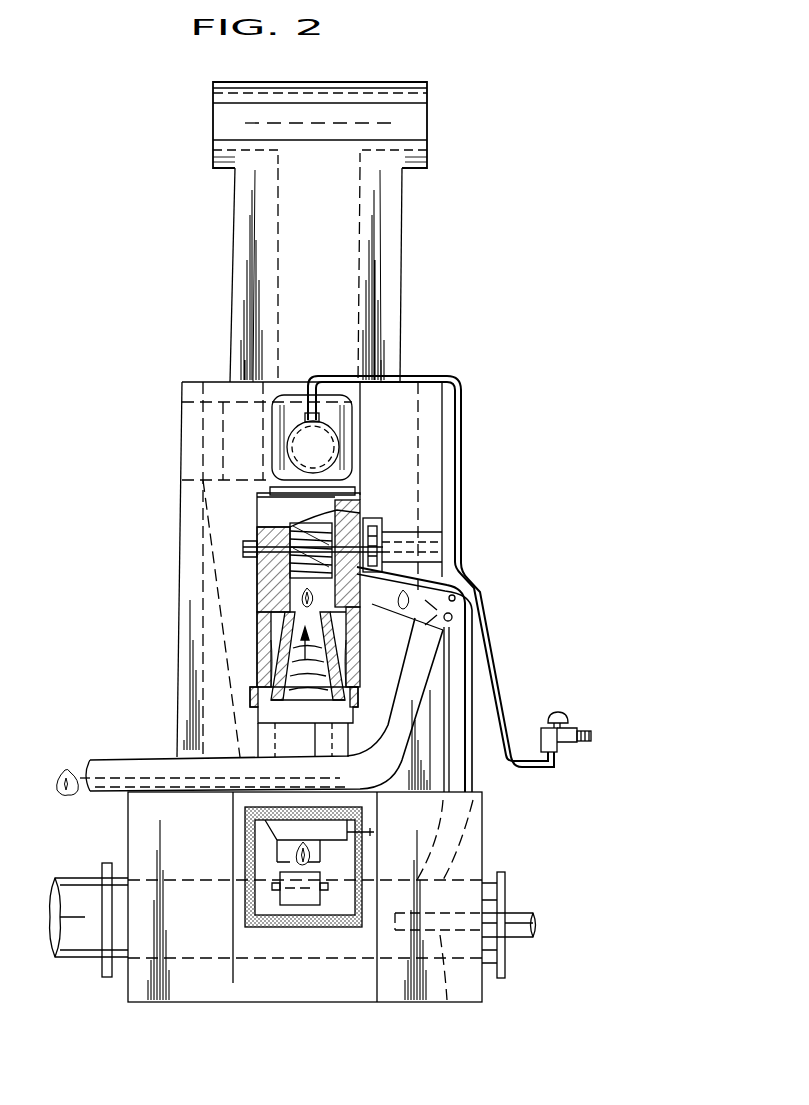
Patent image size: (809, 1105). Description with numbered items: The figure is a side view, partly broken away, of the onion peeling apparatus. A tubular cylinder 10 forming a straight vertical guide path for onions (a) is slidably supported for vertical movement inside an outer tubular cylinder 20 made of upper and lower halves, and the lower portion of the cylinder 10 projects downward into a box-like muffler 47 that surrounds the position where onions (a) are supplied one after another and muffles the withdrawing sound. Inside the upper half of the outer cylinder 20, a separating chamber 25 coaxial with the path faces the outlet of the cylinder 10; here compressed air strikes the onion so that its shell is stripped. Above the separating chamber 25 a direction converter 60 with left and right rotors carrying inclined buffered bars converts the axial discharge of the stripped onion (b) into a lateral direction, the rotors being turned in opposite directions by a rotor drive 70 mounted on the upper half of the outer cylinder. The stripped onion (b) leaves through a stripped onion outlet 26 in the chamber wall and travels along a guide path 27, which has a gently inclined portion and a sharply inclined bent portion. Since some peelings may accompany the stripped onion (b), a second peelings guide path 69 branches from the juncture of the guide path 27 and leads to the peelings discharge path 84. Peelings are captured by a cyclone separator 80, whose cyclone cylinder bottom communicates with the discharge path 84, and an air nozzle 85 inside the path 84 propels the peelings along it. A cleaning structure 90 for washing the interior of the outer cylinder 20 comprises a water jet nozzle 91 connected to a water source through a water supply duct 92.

The tubular cylinder 10 is at (326, 690).
The outer tubular cylinder 20 is at (257, 641).
The separating chamber 25 is at (301, 615).
The stripped onion outlet 26 is at (348, 592).
The stripped onion guide path 27 is at (403, 580).
The muffler 47 is at (300, 927).
The direction converter 60 is at (286, 522).
The second peelings guide path 69 is at (478, 690).
The rotor drive 70 is at (386, 515).
The cyclone separator 80 is at (409, 293).
The peelings discharge path 84 is at (73, 958).
The air nozzle 85 is at (445, 1000).
The cleaning structure 90 is at (464, 413).
The water jet nozzle 91 is at (331, 431).
The water supply duct 92 is at (461, 474).
The onion a is at (320, 852).
The stripped onion b is at (64, 795).